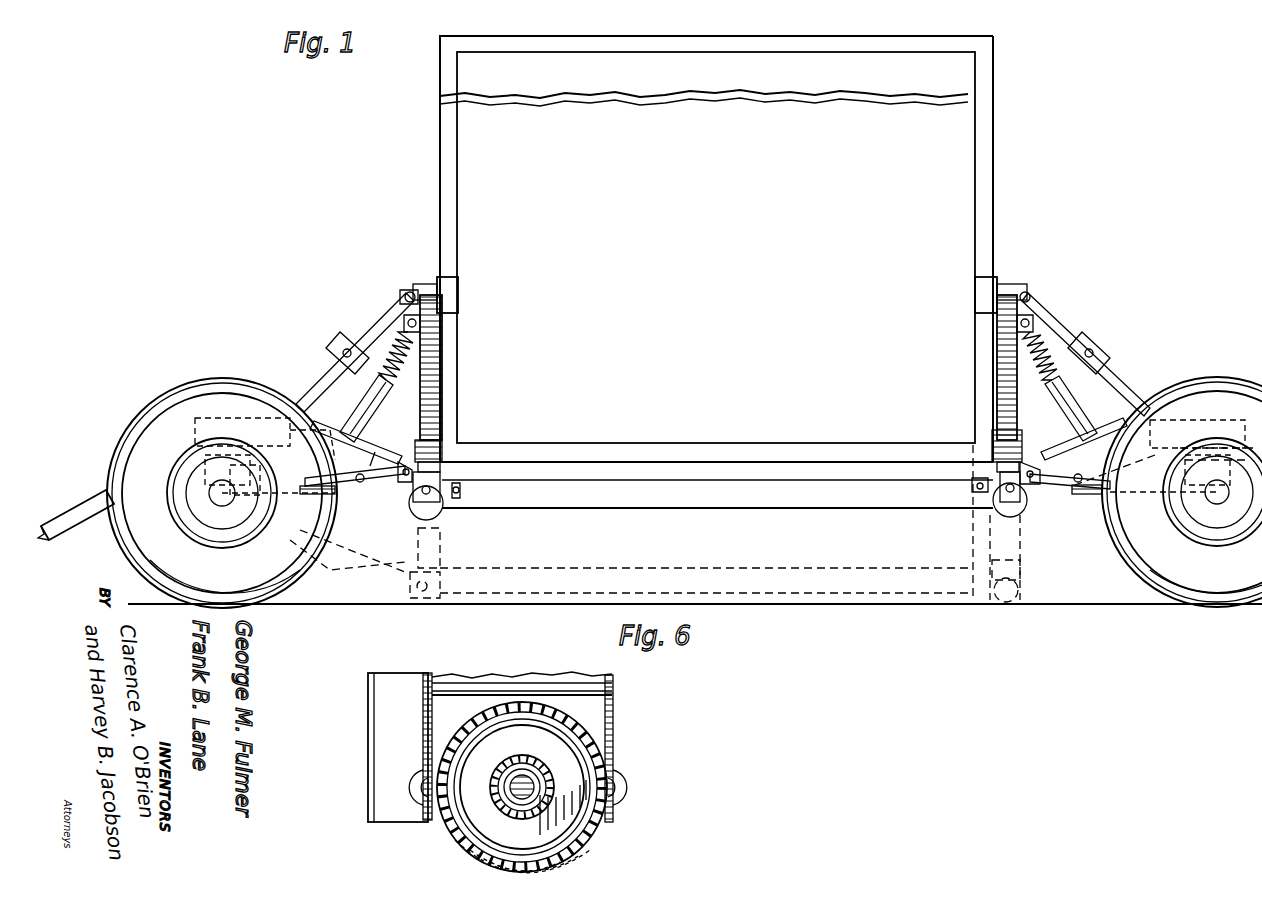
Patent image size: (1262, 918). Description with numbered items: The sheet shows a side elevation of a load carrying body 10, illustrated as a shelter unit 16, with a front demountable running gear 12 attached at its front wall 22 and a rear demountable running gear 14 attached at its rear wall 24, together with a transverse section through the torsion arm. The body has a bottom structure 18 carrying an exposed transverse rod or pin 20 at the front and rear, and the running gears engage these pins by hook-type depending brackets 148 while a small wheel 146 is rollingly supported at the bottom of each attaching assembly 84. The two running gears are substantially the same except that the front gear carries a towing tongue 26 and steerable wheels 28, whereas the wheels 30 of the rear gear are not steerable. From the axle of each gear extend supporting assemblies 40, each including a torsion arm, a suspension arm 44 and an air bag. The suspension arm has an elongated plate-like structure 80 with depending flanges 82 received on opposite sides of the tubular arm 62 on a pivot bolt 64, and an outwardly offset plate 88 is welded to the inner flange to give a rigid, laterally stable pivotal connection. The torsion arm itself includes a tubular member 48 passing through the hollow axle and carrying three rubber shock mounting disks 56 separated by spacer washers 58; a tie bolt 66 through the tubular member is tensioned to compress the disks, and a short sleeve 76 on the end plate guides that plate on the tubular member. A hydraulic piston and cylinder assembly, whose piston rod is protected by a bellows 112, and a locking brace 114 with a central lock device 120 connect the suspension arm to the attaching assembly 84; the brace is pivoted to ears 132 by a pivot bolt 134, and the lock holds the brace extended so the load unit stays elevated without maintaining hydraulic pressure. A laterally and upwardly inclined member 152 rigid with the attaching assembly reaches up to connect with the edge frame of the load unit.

In FIG. 1, the load carrying body 10 is at (424, 120).
In FIG. 1, the front demountable running gear 12 is at (244, 372).
In FIG. 1, the rear demountable running gear 14 is at (1152, 368).
In FIG. 1, the shelter unit 16 is at (950, 213).
In FIG. 1, the bottom structure 18 is at (793, 484).
In FIG. 1, the transversely extending rod or pin 20 is at (462, 590).
In FIG. 1, the front wall 22 is at (440, 180).
In FIG. 1, the rear wall 24 is at (990, 140).
In FIG. 1, the towing tongue 26 is at (64, 515).
In FIG. 1, the steerable wheels 28 is at (305, 560).
In FIG. 1, the wheels 30 is at (1215, 598).
In FIG. 1, the supporting assembly 40 is at (1047, 490).
In FIG. 1, the suspension arm 44 is at (378, 440).
In FIG. 6, the tubular member 48 is at (575, 815).
In FIG. 6, the rubber shock mounting disk 56 is at (468, 858).
In FIG. 6, the spacer washer 58 is at (545, 862).
In FIG. 1, the tubular arm 62 is at (350, 484).
In FIG. 6, the tubular arm 62 is at (570, 840).
In FIG. 6, the pivot bolt 64 is at (625, 790).
In FIG. 6, the tie bolt 66 is at (535, 778).
In FIG. 6, the sleeve 76 is at (520, 775).
In FIG. 1, the plate-like structure 80 is at (1108, 432).
In FIG. 6, the plate-like structure 80 is at (522, 684).
In FIG. 6, the depending flange 82 is at (612, 720).
In FIG. 1, the attaching assembly 84 is at (995, 370).
In FIG. 6, the outwardly offset plate 88 is at (385, 722).
In FIG. 1, the protective bellows 112 is at (425, 360).
In FIG. 1, the locking brace 114 is at (312, 388).
In FIG. 1, the central lock device 120 is at (342, 346).
In FIG. 1, the ears 132 is at (420, 290).
In FIG. 1, the pivot bolt 134 is at (405, 296).
In FIG. 1, the small wheel 146 is at (1005, 508).
In FIG. 1, the hook-type depending bracket 148 is at (455, 498).
In FIG. 1, the laterally and upwardly inclined member 152 is at (430, 388).